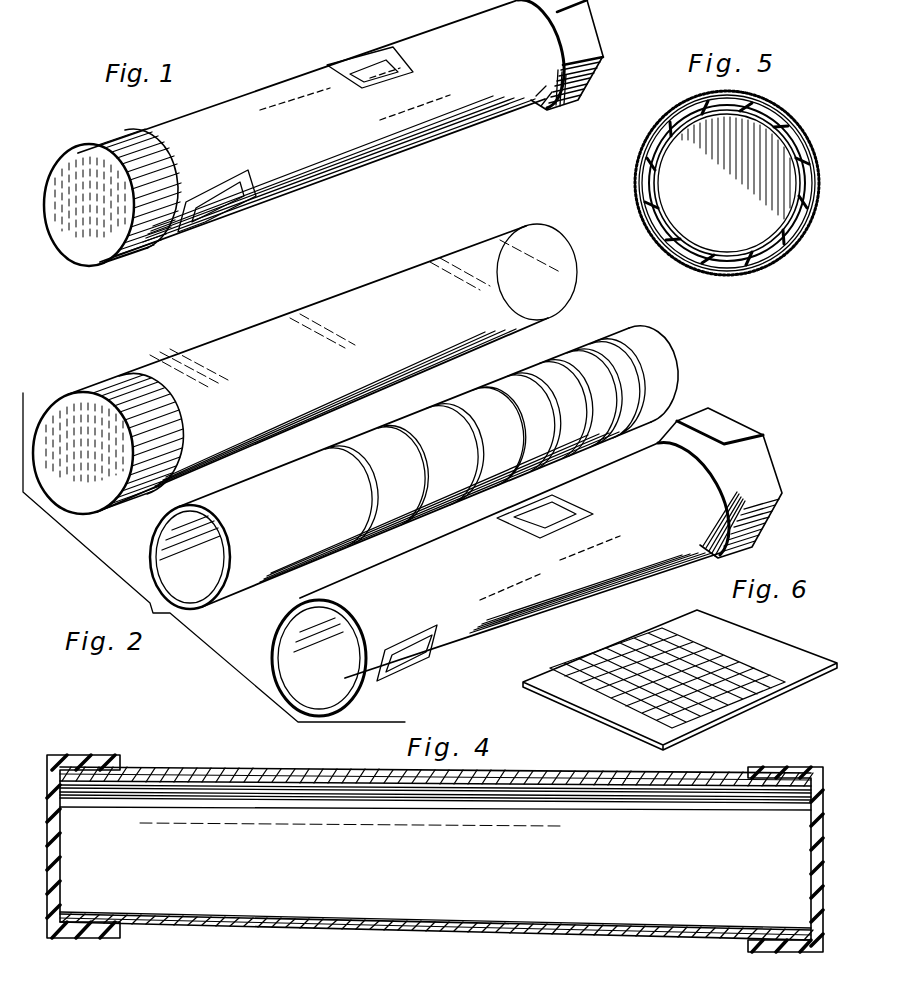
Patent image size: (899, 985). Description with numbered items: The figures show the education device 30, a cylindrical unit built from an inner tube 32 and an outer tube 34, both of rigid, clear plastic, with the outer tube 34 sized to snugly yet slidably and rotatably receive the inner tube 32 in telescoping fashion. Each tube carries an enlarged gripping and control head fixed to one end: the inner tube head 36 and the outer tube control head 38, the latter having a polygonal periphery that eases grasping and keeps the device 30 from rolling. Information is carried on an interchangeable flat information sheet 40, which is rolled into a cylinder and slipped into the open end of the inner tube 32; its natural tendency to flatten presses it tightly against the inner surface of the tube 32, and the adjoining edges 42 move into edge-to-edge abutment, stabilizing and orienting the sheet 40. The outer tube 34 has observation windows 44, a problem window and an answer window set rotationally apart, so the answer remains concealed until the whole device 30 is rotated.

In FIG. 1, the education device 30 is at (337, 147).
In FIG. 2, the inner tube 32 is at (243, 330).
In FIG. 4, the inner tube 32 is at (423, 940).
In FIG. 1, the outer tube 34 is at (402, 160).
In FIG. 2, the outer tube 34 is at (474, 655).
In FIG. 4, the outer tube 34 is at (510, 943).
In FIG. 1, the inner tube head 36 is at (90, 248).
In FIG. 2, the inner tube head 36 is at (84, 388).
In FIG. 5, the inner tube head 36 is at (803, 228).
In FIG. 4, the inner tube head 36 is at (88, 756).
In FIG. 1, the outer tube control head 38 is at (577, 32).
In FIG. 2, the outer tube control head 38 is at (730, 428).
In FIG. 4, the outer tube control head 38 is at (812, 858).
In FIG. 2, the information sheet 40 is at (679, 371).
In FIG. 5, the information sheet 40 is at (669, 150).
In FIG. 6, the information sheet 40 is at (751, 713).
In FIG. 4, the information sheet 40 is at (398, 916).
In FIG. 2, the adjoining edges 42 is at (628, 342).
In FIG. 5, the adjoining edges 42 is at (722, 108).
In FIG. 6, the adjoining edges 42 is at (684, 618).
In FIG. 1, the observation windows 44 is at (362, 66).
In FIG. 2, the observation windows 44 is at (563, 507).